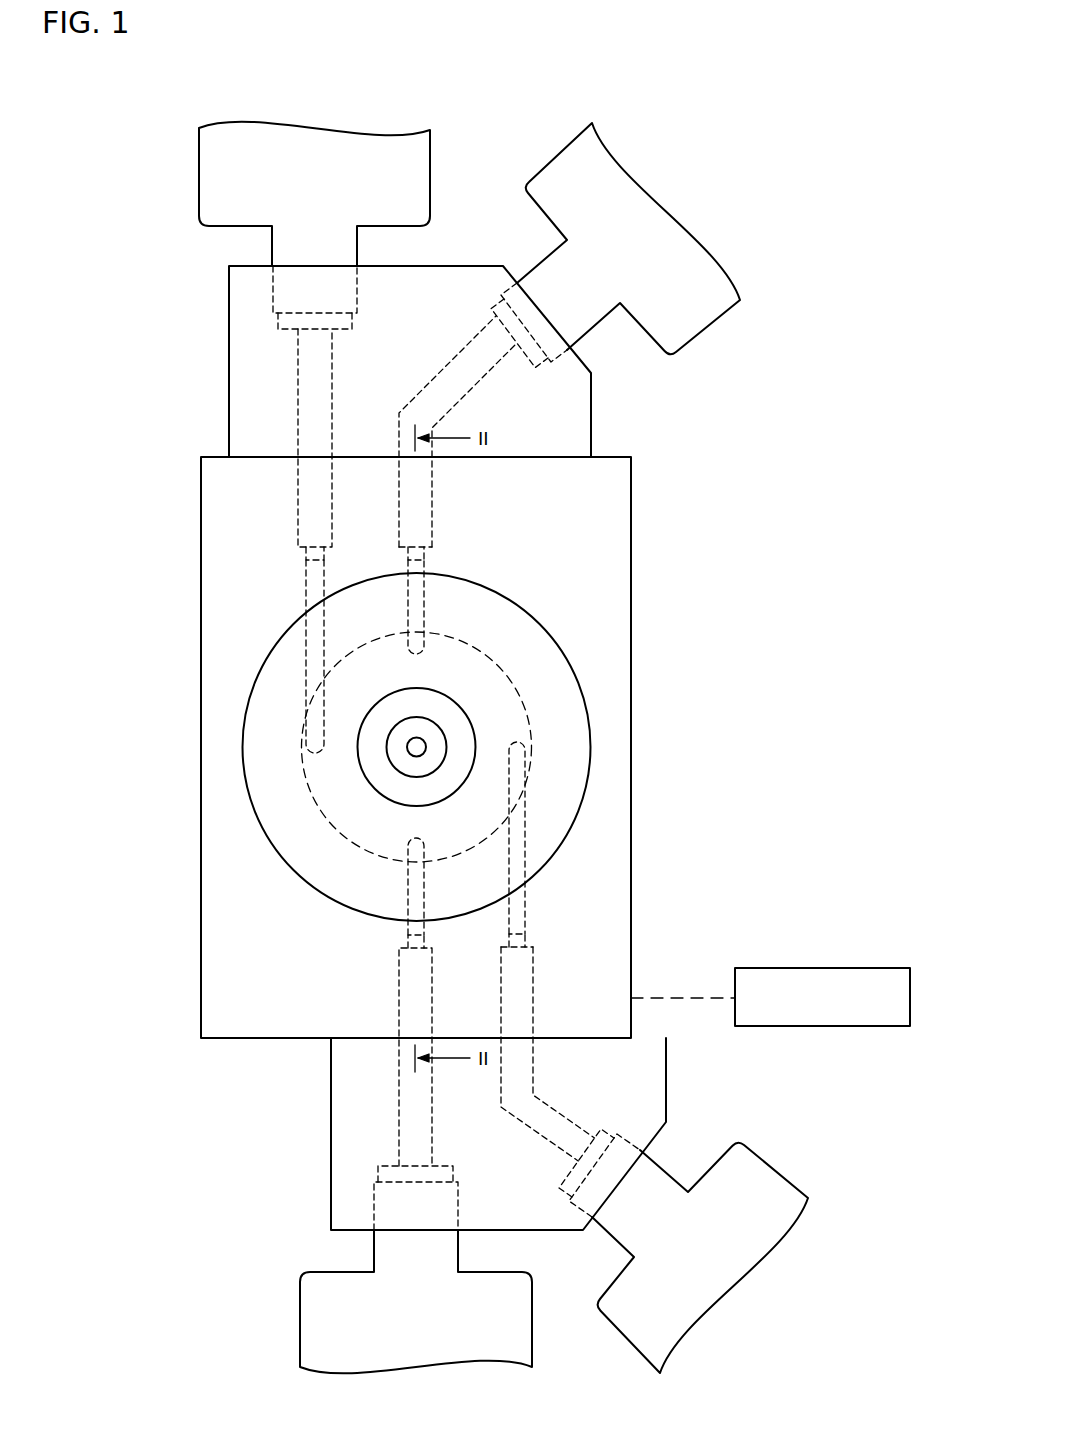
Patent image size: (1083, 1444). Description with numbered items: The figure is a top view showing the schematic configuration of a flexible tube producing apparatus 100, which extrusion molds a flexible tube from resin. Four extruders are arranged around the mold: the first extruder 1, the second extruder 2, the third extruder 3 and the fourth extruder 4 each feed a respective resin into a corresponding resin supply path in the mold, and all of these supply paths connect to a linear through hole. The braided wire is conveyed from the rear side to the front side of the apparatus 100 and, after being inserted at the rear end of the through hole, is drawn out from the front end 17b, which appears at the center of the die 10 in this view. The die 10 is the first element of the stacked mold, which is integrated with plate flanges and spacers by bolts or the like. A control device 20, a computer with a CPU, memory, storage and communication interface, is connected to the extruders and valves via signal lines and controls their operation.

The flexible tube producing apparatus 100 is at (107, 146).
The first extruder 1 is at (701, 226).
The second extruder 2 is at (300, 1280).
The third extruder 3 is at (358, 134).
The fourth extruder 4 is at (788, 1176).
The die 10 is at (434, 702).
The front end 17b is at (427, 747).
The control device 20 is at (877, 968).